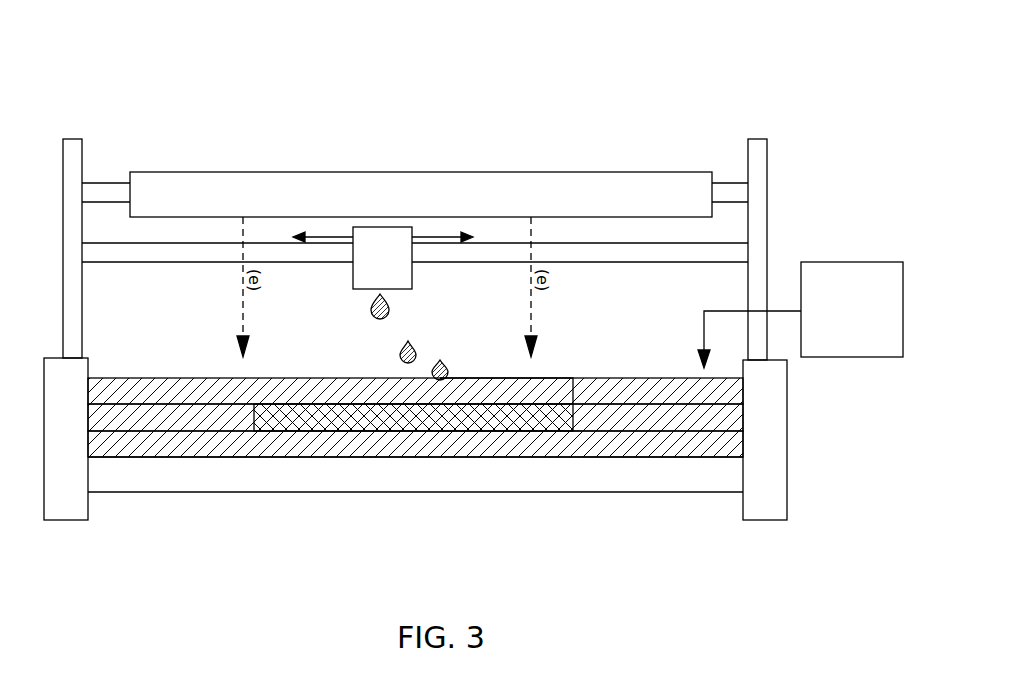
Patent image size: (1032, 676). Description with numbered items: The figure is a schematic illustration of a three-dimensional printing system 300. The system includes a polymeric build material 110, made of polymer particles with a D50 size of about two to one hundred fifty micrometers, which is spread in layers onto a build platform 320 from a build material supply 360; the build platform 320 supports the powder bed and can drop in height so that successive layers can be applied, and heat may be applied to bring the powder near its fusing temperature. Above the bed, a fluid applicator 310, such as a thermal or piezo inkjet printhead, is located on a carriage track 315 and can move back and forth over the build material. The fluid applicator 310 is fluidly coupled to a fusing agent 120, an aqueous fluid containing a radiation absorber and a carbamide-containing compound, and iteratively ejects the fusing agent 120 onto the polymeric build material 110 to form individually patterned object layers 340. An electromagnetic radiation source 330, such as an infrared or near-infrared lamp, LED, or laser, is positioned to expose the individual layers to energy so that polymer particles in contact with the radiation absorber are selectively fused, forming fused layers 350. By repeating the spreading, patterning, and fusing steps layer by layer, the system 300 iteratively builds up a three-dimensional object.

The three-dimensional printing system 300 is at (166, 72).
The fluid applicator 310 is at (402, 268).
The carriage track 315 is at (578, 252).
The build platform 320 is at (437, 486).
The electromagnetic radiation source 330 is at (447, 207).
The individually patterned object layer 340 is at (513, 400).
The fused layer 350 is at (322, 413).
The build material supply 360 is at (872, 322).
The polymeric build material 110 is at (180, 414).
The fusing agent 120 is at (372, 306).